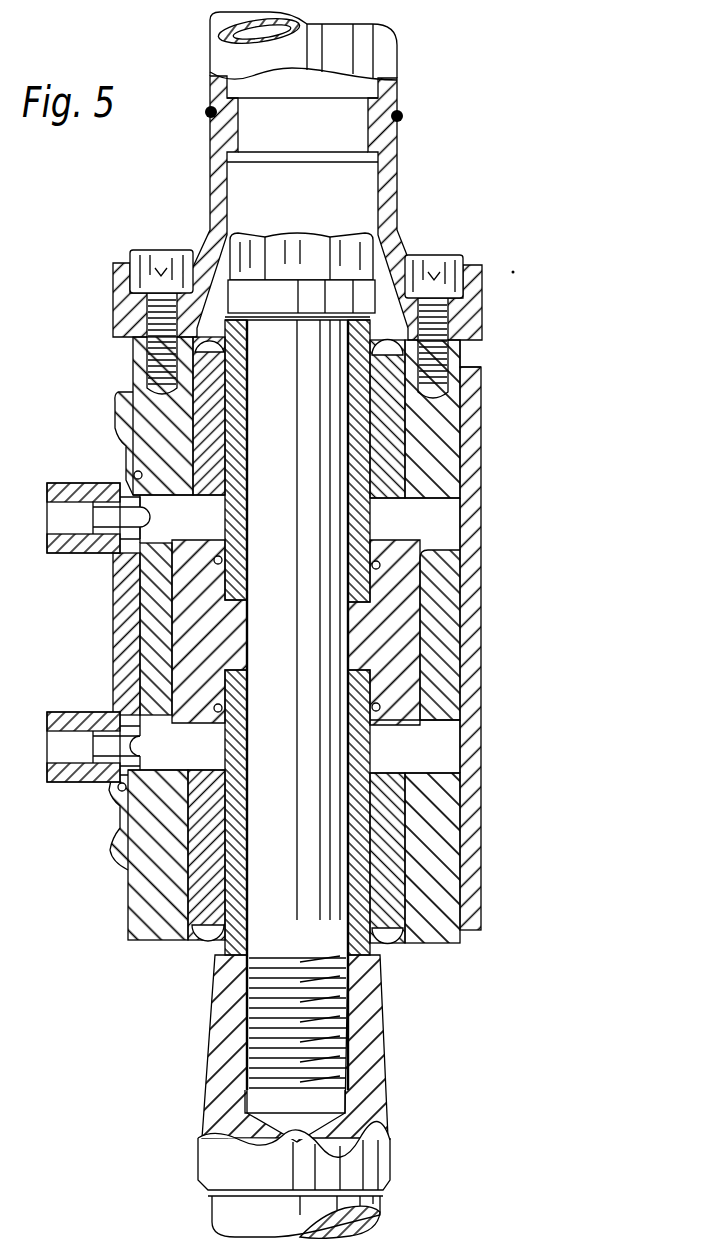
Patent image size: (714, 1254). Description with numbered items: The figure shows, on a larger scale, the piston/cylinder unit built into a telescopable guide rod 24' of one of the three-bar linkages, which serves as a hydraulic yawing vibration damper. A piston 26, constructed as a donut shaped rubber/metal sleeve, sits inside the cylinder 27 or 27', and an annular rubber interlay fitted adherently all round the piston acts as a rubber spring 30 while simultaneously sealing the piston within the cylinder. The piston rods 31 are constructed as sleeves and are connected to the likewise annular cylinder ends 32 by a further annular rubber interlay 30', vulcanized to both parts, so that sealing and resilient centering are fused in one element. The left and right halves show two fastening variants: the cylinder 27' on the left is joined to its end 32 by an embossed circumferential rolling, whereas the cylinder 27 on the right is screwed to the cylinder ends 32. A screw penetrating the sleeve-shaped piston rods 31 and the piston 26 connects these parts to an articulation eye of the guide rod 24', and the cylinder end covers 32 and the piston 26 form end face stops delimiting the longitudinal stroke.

The guide rod 24' is at (305, 176).
The piston 26 is at (403, 616).
The cylinder 27 is at (511, 635).
The cylinder 27' is at (78, 632).
The rubber spring 30 is at (478, 635).
The rubber interlay 30' is at (478, 641).
The piston rod 31 is at (237, 417).
The cylinder end 32 is at (162, 433).